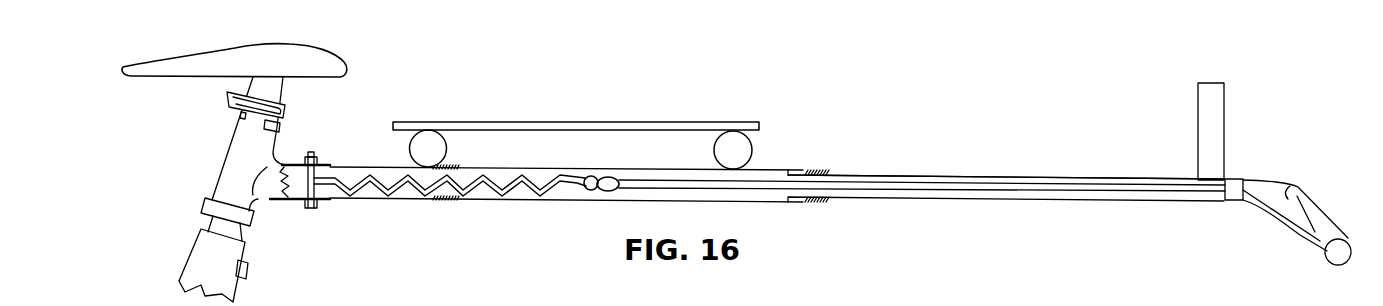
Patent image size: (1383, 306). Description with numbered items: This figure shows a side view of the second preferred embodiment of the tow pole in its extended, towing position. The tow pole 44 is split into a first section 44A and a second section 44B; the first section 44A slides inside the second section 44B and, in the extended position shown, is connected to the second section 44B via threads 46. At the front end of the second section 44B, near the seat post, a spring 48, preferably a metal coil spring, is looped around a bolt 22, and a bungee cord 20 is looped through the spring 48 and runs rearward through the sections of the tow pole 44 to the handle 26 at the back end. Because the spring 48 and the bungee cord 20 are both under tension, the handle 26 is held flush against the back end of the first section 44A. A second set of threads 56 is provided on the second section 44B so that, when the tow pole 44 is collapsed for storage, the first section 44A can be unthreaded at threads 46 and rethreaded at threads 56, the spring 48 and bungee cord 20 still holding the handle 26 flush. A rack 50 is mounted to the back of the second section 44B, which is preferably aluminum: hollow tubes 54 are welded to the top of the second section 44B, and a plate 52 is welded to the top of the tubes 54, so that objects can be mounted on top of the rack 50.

The bungee cord 20 is at (1085, 185).
The bolt 22 is at (315, 188).
The handle 26 is at (1312, 200).
The tow pole 44 is at (882, 157).
The first section 44A is at (1008, 202).
The second section 44B is at (582, 200).
The threads 46 is at (810, 203).
The spring 48 is at (395, 187).
The rack 50 is at (616, 96).
The plate 52 is at (508, 122).
The hollow tubes 54 is at (753, 147).
The threads 56 is at (447, 167).